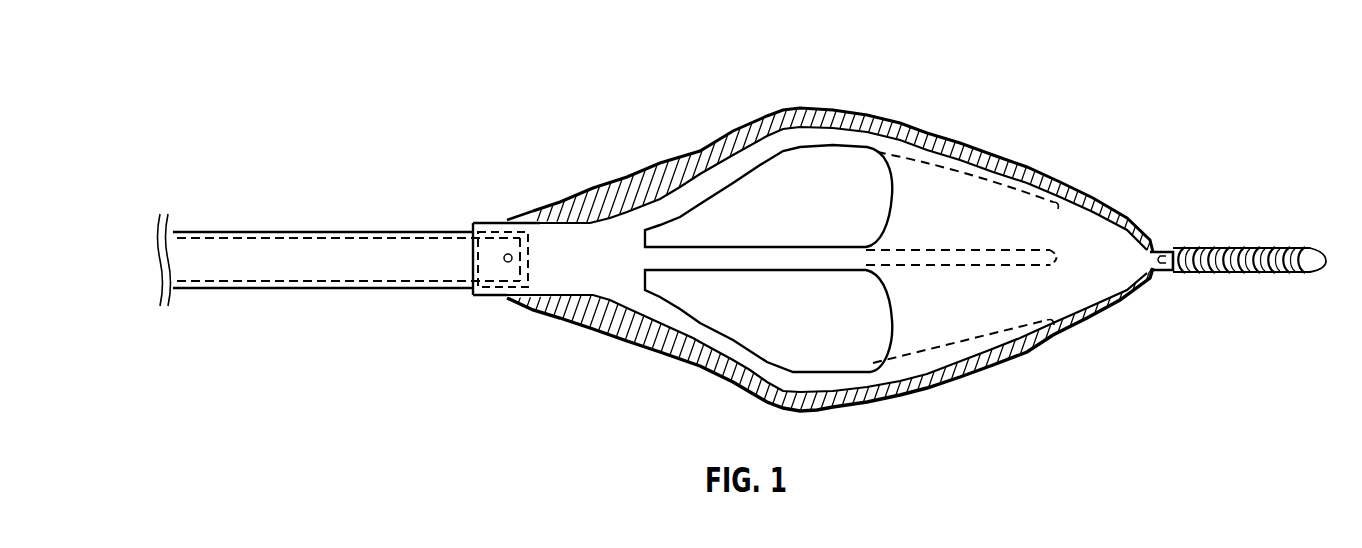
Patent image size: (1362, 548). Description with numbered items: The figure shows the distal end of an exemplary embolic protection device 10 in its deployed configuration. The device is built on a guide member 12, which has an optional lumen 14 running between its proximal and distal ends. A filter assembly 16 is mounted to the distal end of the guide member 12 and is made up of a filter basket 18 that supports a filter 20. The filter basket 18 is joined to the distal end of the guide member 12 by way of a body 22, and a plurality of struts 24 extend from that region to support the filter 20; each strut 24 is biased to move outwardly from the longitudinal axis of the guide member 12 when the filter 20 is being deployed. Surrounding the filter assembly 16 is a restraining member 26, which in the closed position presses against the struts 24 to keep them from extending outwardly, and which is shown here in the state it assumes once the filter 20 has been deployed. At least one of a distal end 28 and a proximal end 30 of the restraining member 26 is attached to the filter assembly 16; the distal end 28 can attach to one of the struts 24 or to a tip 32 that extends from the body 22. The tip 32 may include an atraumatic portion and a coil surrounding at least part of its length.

The embolic protection device 10 is at (589, 104).
The guide member 12 is at (288, 290).
The lumen 14 is at (207, 283).
The filter assembly 16 is at (885, 250).
The filter basket 18 is at (483, 204).
The filter 20 is at (1087, 230).
The body 22 is at (494, 295).
The struts 24 is at (728, 180).
The restraining member 26 is at (1016, 368).
The distal end 28 is at (1154, 282).
The proximal end 30 is at (505, 213).
The tip 32 is at (1260, 272).